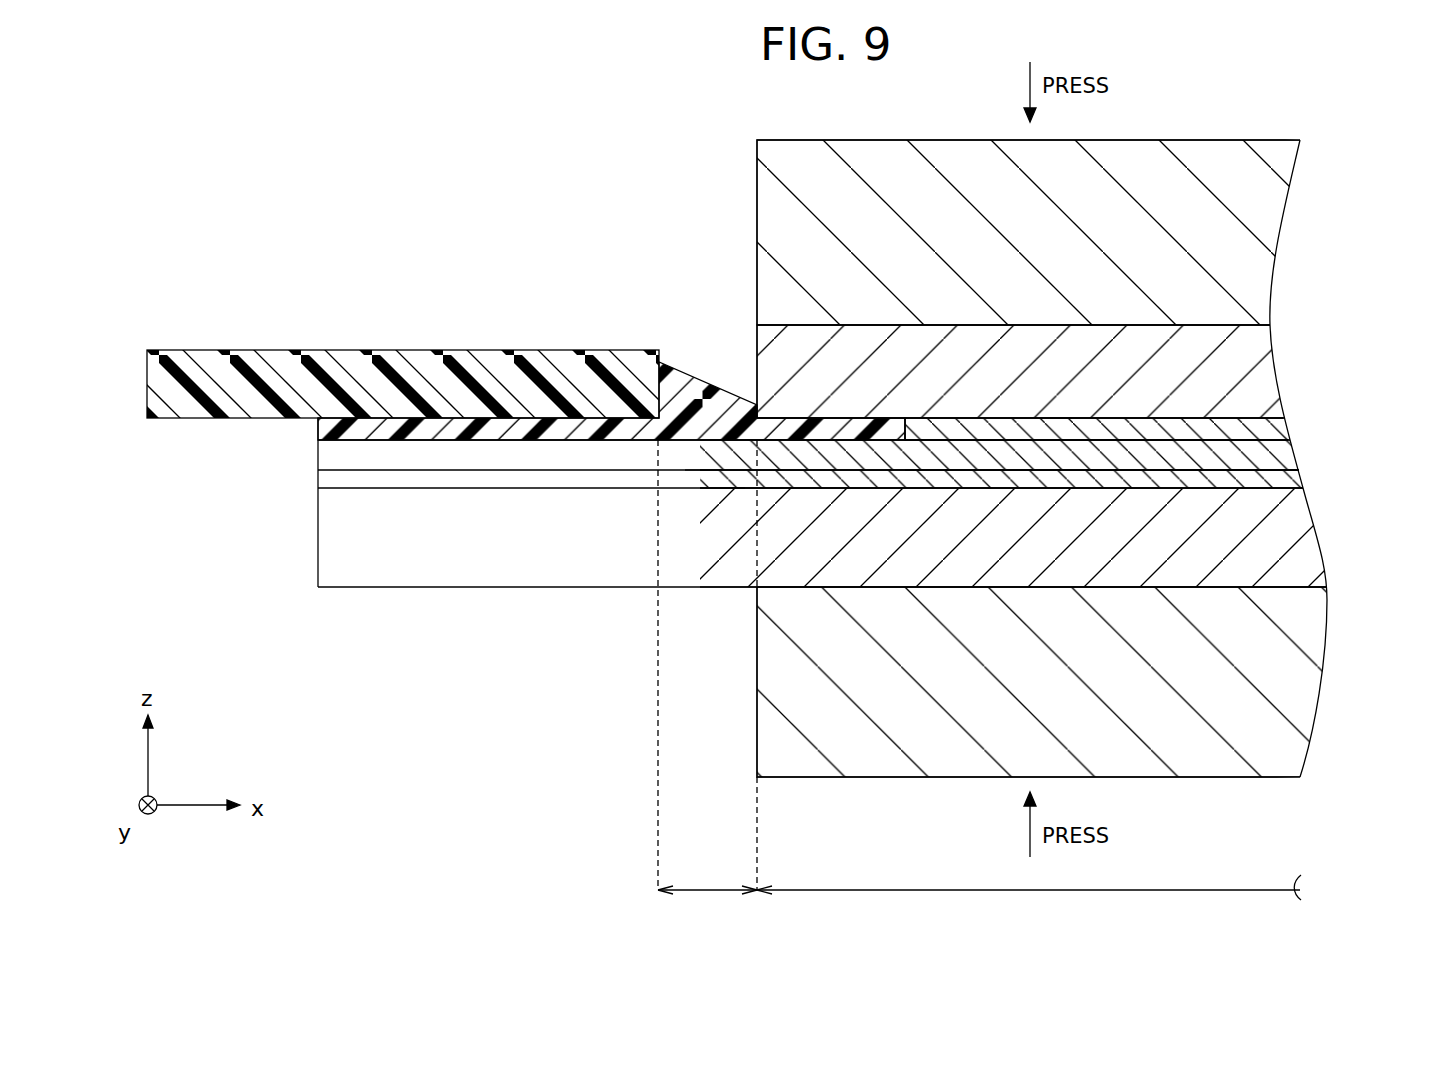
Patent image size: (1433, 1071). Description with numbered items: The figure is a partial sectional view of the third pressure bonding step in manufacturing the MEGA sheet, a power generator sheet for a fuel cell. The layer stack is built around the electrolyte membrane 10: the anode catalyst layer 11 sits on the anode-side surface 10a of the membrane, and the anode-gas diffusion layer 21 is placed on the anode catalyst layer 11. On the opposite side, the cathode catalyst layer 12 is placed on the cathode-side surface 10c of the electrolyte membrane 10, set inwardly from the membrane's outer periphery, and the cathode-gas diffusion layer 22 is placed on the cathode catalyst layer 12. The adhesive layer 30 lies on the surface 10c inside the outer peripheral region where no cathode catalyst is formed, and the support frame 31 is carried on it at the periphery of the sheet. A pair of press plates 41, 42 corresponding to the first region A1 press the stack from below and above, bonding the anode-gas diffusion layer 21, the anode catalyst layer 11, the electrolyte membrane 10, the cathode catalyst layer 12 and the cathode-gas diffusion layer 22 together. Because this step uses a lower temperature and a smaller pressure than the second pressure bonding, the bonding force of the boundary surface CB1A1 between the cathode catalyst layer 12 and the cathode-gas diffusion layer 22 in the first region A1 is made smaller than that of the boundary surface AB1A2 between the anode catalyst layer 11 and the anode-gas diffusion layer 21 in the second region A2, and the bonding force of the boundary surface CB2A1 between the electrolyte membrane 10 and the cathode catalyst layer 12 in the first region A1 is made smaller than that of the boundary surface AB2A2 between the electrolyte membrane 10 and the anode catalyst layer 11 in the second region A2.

The electrolyte membrane 10 is at (1273, 454).
The surface on anode side of electrolyte membrane 10a is at (1218, 474).
The surface on cathode side of electrolyte membrane 10c is at (1233, 428).
The anode catalyst layer 11 is at (1278, 482).
The cathode catalyst layer 12 is at (1263, 432).
The anode-gas diffusion layer 21 is at (1280, 557).
The cathode-gas diffusion layer 22 is at (1250, 350).
The adhesive layer 30 is at (333, 427).
The support frame 31 is at (160, 385).
The press plate 41 is at (1278, 698).
The press plate 42 is at (1250, 183).
The boundary surface between cathode catalyst layer and cathode-gas diffusion layer CB1A1 is at (1065, 417).
The boundary surface between electrolyte membrane and cathode catalyst layer in firs CB2A1 is at (987, 438).
The boundary surface between anode catalyst layer and anode-gas diffusion layer in s AB1A2 is at (733, 490).
The boundary surface between electrolyte membrane and anode catalyst layer in second AB2A2 is at (697, 472).
The first region A1 is at (1029, 901).
The second region A2 is at (707, 684).